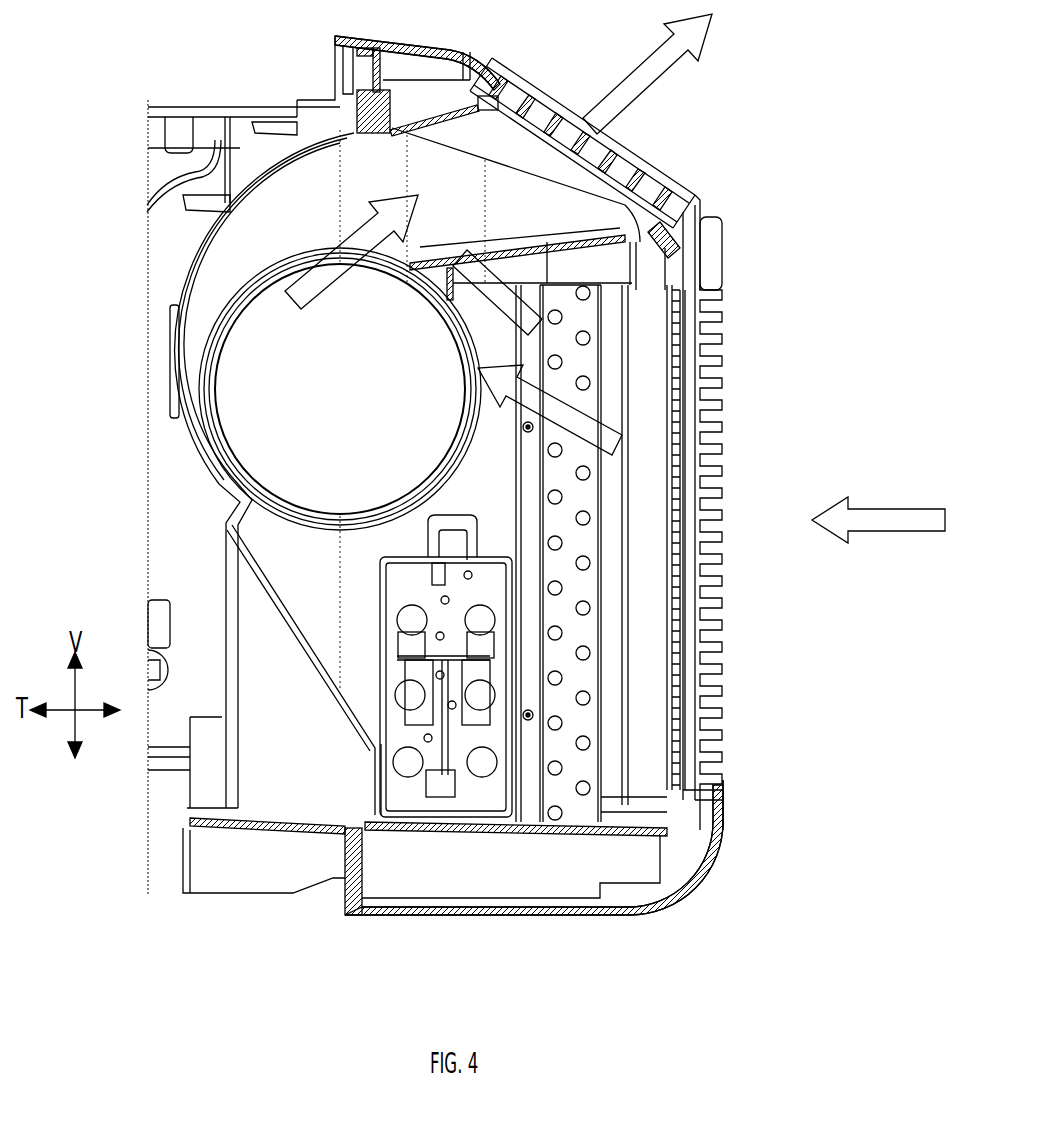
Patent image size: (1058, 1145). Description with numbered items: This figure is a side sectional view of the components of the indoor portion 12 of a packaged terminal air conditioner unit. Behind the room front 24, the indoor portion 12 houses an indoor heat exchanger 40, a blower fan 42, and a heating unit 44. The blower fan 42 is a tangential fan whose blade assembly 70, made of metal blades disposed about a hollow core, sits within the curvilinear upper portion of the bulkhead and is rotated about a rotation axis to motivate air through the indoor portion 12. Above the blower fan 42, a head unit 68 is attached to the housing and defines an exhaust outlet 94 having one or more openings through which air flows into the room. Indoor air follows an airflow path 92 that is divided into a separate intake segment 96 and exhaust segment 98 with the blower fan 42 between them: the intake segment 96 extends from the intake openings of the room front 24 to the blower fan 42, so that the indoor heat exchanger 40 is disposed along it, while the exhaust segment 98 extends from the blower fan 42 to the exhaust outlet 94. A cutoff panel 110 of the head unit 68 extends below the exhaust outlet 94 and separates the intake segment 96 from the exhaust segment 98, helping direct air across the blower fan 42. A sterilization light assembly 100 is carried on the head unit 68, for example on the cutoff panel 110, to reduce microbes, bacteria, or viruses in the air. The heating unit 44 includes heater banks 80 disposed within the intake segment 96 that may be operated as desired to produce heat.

The indoor portion 12 is at (458, 944).
The room front 24 is at (718, 308).
The indoor heat exchanger 40 is at (598, 785).
The blower fan 42 is at (216, 474).
The heating unit 44 is at (513, 828).
The head unit 68 is at (458, 62).
The blade assembly 70 is at (200, 456).
The heater banks 80 is at (487, 755).
The airflow path 92 is at (607, 418).
The exhaust outlet 94 is at (665, 171).
The intake segment 96 is at (526, 536).
The exhaust segment 98 is at (356, 174).
The sterilization light assembly 100 is at (497, 288).
The cutoff panel 110 is at (572, 242).